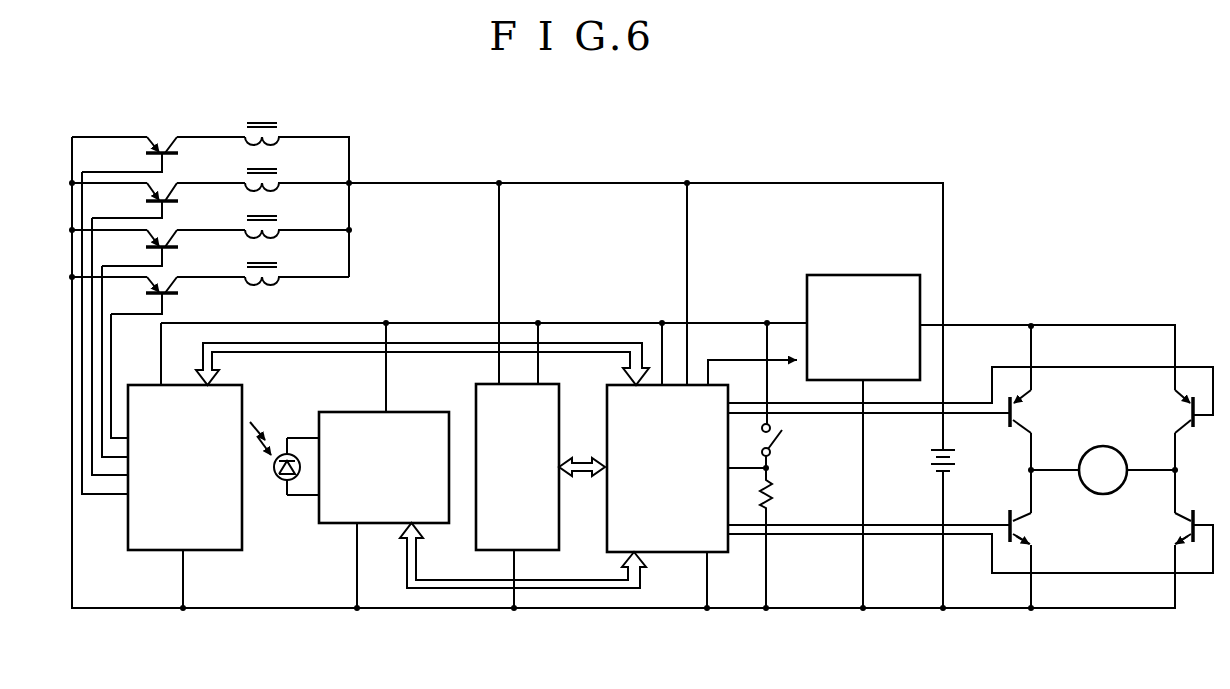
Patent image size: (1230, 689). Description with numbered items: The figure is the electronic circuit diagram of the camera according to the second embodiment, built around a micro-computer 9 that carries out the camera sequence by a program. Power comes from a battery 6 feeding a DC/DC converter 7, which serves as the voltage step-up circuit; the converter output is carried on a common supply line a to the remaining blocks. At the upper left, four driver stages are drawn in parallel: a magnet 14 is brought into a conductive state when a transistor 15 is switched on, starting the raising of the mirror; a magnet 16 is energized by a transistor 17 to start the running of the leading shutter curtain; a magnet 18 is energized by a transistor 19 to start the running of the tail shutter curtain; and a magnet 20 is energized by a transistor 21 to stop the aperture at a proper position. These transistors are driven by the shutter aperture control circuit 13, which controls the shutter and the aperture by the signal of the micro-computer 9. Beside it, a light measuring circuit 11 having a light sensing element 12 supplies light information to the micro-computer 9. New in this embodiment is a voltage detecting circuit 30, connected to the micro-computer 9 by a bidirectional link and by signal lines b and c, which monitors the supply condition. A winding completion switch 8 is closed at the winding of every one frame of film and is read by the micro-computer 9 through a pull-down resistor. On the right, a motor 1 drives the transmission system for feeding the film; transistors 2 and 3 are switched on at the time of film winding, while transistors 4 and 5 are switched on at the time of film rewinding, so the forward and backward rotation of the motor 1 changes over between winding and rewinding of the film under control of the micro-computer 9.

The motor 1 is at (1103, 446).
The transistor 2 is at (1022, 413).
The transistor 3 is at (1182, 525).
The transistor 4 is at (1182, 413).
The transistor 5 is at (1022, 525).
The battery 6 is at (958, 459).
The DC/DC converter 7 is at (903, 274).
The winding completion switch 8 is at (776, 437).
The micro-computer 9 is at (727, 384).
The light measuring circuit 11 is at (434, 410).
The light sensing element 12 is at (274, 474).
The shutter aperture control circuit 13 is at (242, 386).
The magnet 14 is at (271, 122).
The transistor 15 is at (165, 150).
The magnet 16 is at (275, 170).
The transistor 17 is at (170, 186).
The magnet 18 is at (275, 217).
The transistor 19 is at (170, 233).
The magnet 20 is at (275, 264).
The transistor 21 is at (170, 280).
The voltage detecting circuit 30 is at (559, 385).
The power supply line a is at (499, 222).
The signal line b is at (516, 563).
The signal line c is at (534, 372).